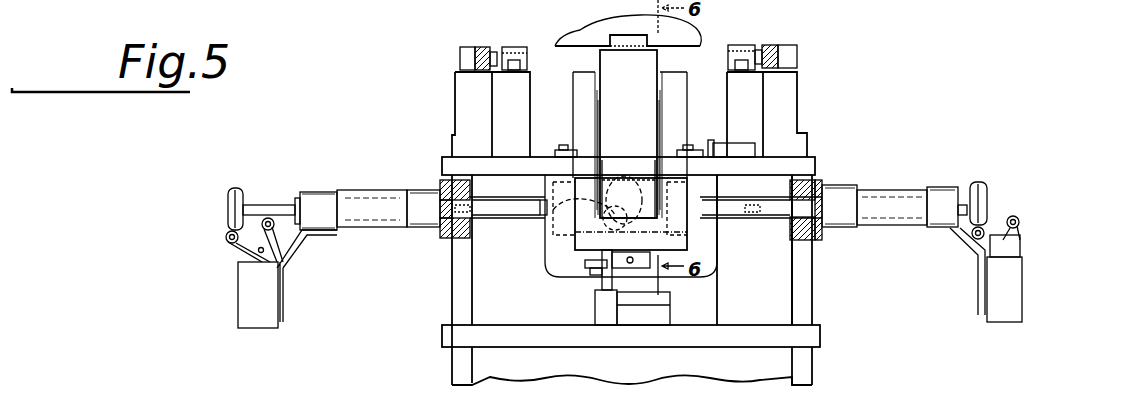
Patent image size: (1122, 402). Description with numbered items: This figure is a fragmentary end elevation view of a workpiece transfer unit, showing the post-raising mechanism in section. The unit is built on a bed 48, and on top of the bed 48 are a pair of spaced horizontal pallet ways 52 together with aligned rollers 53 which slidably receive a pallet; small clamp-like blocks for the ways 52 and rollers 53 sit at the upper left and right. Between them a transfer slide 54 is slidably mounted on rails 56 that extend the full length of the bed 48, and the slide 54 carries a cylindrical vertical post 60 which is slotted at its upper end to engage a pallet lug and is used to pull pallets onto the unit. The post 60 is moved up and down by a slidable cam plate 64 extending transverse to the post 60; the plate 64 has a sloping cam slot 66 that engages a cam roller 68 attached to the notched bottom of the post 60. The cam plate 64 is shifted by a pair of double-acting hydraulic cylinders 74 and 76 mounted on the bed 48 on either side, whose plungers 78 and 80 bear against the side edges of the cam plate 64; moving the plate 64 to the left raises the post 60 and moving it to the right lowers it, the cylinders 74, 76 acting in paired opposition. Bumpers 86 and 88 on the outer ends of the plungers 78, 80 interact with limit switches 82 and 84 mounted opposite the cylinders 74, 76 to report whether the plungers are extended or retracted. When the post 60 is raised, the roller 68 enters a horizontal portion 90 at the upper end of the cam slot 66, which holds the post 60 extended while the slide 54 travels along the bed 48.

The bed 48 is at (775, 305).
The pallet ways 52 is at (517, 46).
The rollers 53 is at (462, 58).
The transfer slide 54 is at (591, 62).
The rails 56 is at (582, 150).
The vertical post 60 is at (632, 75).
The cam plate 64 is at (570, 248).
The cam slot 66 is at (555, 225).
The cam roller 68 is at (630, 178).
The hydraulic cylinder 74 is at (890, 200).
The hydraulic cylinder 76 is at (352, 200).
The plunger 78 is at (782, 205).
The plunger 80 is at (262, 208).
The limit switch 82 is at (1010, 248).
The limit switch 84 is at (248, 278).
The bumper 86 is at (987, 195).
The bumper 88 is at (232, 205).
The horizontal portion 90 is at (616, 221).